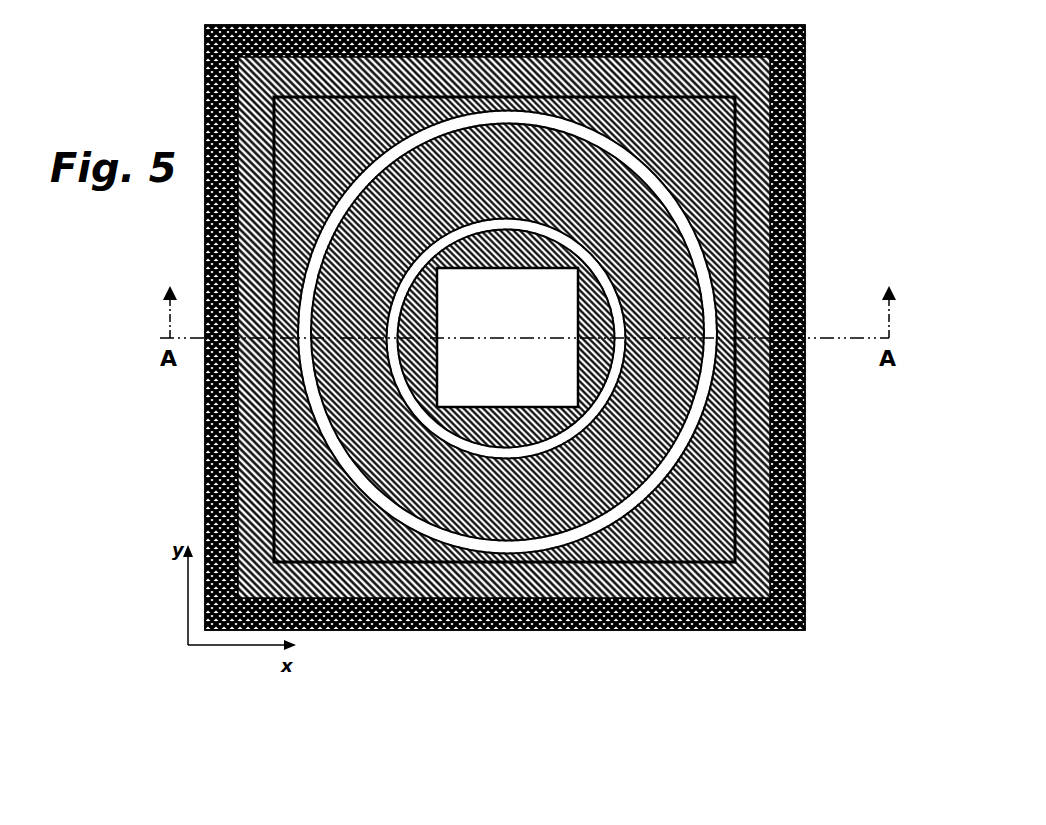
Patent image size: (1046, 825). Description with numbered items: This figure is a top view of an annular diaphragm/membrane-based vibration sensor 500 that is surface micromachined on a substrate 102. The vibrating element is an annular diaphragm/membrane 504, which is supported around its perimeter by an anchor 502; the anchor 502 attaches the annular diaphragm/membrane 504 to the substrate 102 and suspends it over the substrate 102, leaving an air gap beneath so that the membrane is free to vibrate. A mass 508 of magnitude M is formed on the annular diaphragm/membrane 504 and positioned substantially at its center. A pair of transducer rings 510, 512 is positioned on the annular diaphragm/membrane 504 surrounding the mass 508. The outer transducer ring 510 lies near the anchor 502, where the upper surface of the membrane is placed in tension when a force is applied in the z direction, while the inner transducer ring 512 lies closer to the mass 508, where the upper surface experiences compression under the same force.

The sensor device 500 is at (826, 140).
The substrate 102 is at (806, 578).
The anchor 502 is at (540, 582).
The annular diaphragm/membrane 504 is at (685, 508).
The mass 508 is at (507, 337).
The transducer ring 510 is at (641, 164).
The transducer ring 512 is at (452, 216).